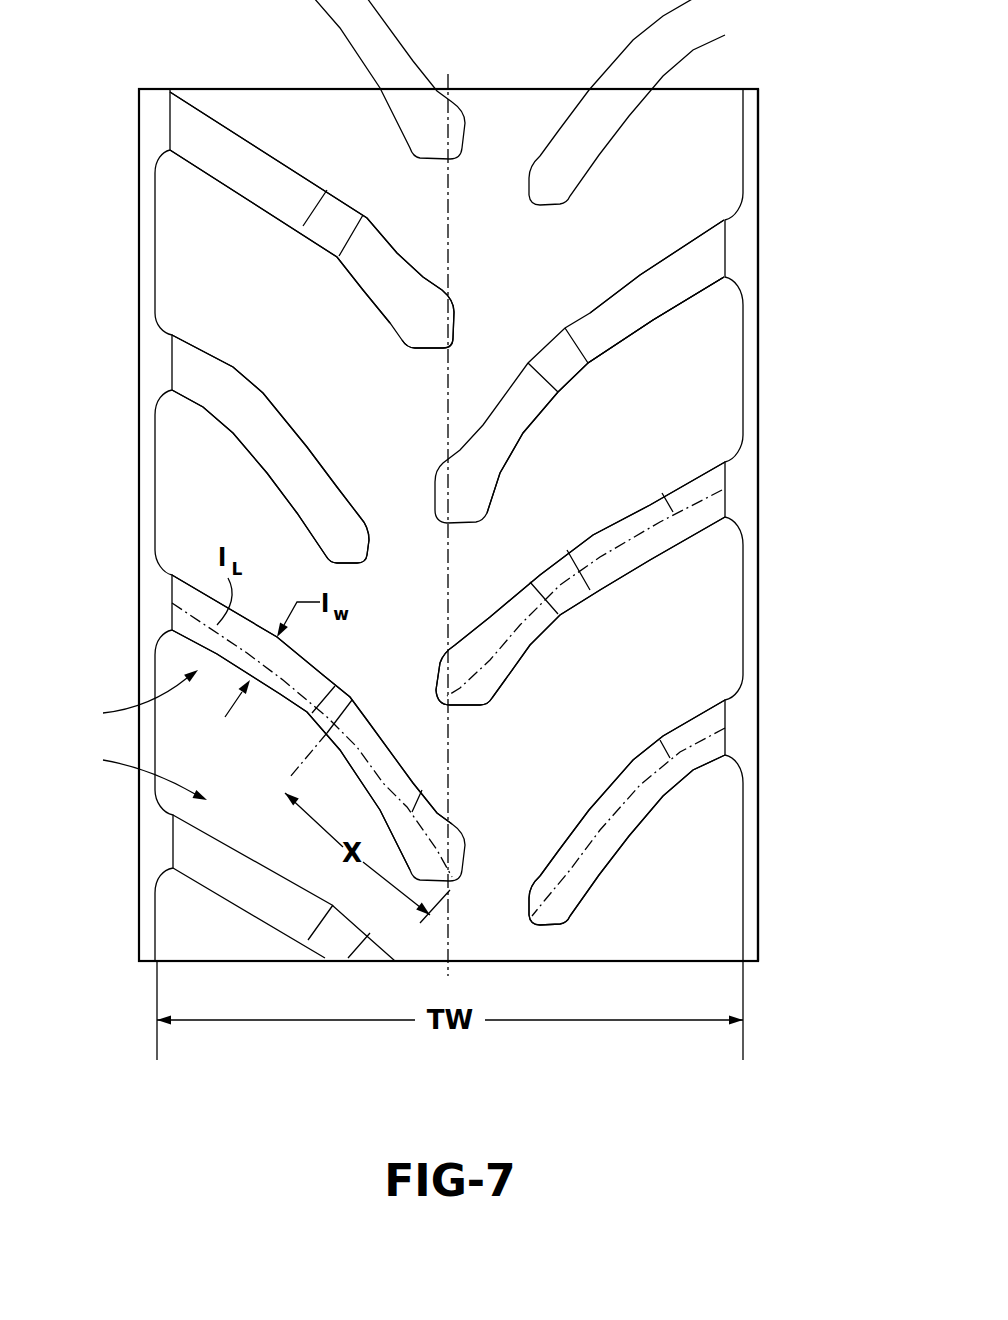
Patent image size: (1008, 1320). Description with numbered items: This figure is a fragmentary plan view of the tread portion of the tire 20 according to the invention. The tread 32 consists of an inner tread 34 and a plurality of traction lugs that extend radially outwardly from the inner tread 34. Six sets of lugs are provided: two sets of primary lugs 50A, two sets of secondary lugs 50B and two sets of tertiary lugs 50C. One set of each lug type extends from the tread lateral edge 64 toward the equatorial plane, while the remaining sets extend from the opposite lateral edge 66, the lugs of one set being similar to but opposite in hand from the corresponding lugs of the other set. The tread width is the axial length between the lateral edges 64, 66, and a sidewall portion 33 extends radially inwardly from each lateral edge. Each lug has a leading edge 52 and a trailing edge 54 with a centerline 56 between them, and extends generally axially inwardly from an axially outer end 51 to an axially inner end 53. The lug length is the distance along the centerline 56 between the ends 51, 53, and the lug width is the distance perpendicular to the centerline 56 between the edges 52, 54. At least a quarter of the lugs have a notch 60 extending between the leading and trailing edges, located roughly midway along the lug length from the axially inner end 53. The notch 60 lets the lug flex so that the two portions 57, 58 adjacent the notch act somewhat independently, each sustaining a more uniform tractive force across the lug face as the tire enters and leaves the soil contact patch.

The tire 20 is at (802, 128).
The tread 32 is at (130, 773).
The sidewall portion 33 is at (760, 383).
The inner tread 34 is at (126, 700).
The primary lugs 50A is at (193, 627).
The secondary lugs 50B is at (193, 127).
The tertiary lugs 50C is at (200, 383).
The axially outer end 51 is at (163, 137).
The leading edge 52 is at (353, 277).
The axially inner end 53 is at (455, 310).
The trailing edge 54 is at (383, 227).
The centerline 56 is at (423, 787).
The lug portion 57 is at (523, 417).
The lug portion 58 is at (645, 302).
The notch 60 is at (328, 218).
The tread lateral edge 64 is at (158, 1028).
The tread lateral edge 66 is at (745, 1029).